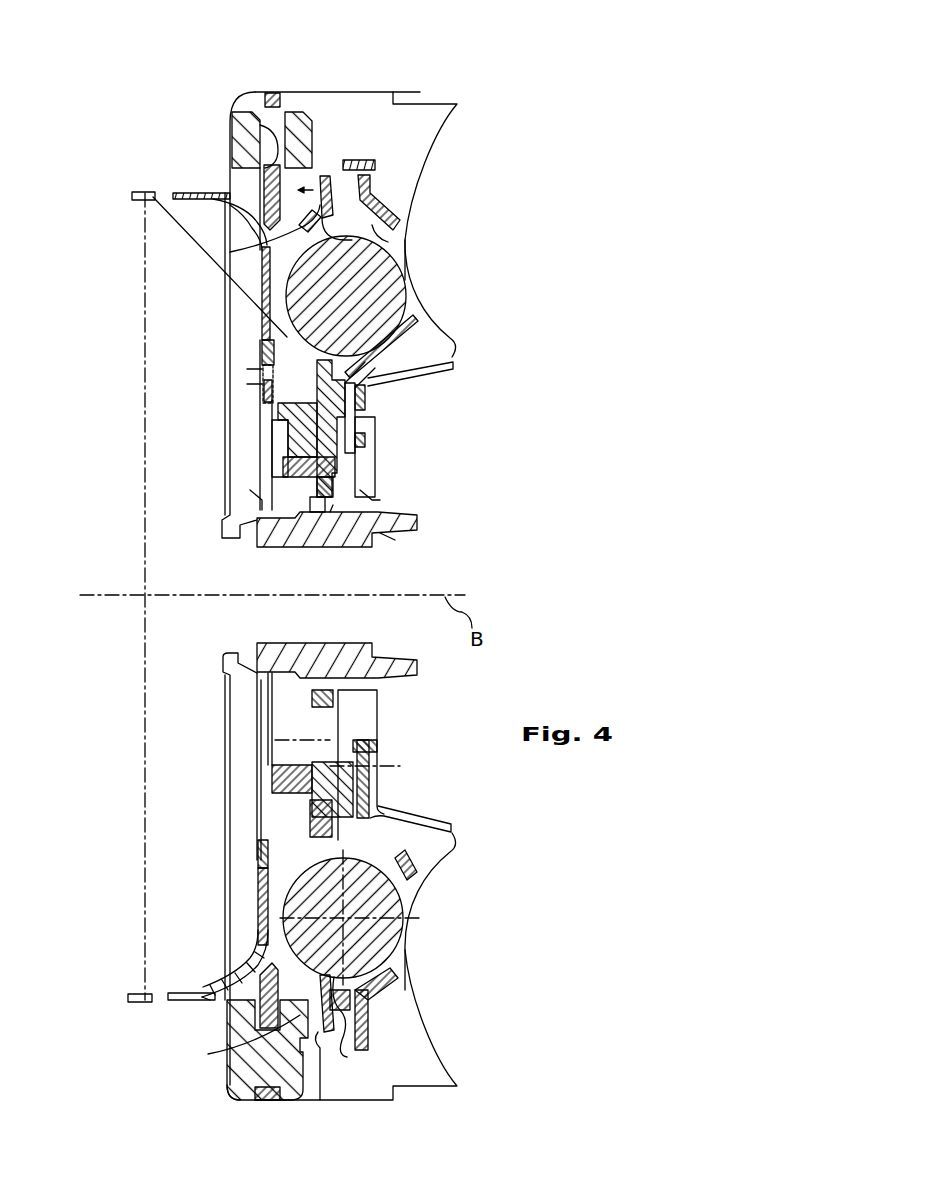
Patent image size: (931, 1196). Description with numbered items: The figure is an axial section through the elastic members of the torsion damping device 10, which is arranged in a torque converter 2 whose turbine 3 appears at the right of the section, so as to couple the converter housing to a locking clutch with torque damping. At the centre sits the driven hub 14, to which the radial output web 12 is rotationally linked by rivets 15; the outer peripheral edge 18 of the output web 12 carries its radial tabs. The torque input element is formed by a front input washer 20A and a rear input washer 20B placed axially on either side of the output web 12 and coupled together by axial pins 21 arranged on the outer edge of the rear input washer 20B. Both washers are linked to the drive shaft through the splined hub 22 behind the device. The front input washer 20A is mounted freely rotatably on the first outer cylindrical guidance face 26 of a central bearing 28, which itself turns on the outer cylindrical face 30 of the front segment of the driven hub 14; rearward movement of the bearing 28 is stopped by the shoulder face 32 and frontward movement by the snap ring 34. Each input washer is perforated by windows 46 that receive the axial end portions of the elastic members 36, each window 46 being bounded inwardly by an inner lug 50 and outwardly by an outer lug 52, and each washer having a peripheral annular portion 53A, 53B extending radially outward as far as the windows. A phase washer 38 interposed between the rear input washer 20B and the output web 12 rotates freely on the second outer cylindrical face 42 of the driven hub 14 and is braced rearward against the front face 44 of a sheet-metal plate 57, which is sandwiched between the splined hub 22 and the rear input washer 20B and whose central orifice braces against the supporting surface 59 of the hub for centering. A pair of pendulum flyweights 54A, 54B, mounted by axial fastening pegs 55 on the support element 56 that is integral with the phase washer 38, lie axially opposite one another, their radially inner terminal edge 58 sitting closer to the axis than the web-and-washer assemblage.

The torque converter 2 is at (415, 100).
The turbine 3 is at (440, 856).
The torsion damping device 10 is at (526, 256).
The output web 12 is at (340, 429).
The driven hub 14 is at (353, 534).
The rivets 15 is at (274, 469).
The outer peripheral edge 18 is at (375, 389).
The front input washer 20A is at (412, 345).
The rear input washer 20B is at (262, 195).
The axial pins 21 is at (347, 1057).
The splined hub 22 is at (262, 268).
The first outer cylindrical guidance face 26 is at (368, 447).
The central bearing 28 is at (372, 471).
The outer cylindrical face 30 is at (333, 514).
The shoulder face 32 is at (307, 515).
The snap ring 34 is at (380, 528).
The elastic member 36 is at (385, 289).
The phase washer 38 is at (262, 361).
The second outer cylindrical face 42 is at (320, 823).
The front face 44 is at (262, 376).
The window 46 is at (372, 225).
The inner lug 50 is at (420, 338).
The outer lug 52 is at (392, 211).
The peripheral annular portion 53A is at (375, 183).
The peripheral annular portion 53B is at (322, 178).
The pendulum flyweight 54A is at (280, 98).
The pendulum flyweight 54B is at (243, 138).
The axial fastening pegs 55 is at (323, 1060).
The support element 56 is at (263, 122).
The plate 57 is at (262, 404).
The radially inner terminal edge 58 is at (238, 973).
The supporting surface 59 is at (272, 434).